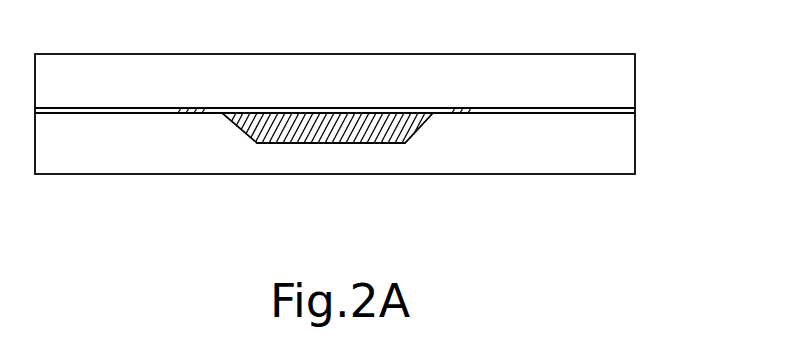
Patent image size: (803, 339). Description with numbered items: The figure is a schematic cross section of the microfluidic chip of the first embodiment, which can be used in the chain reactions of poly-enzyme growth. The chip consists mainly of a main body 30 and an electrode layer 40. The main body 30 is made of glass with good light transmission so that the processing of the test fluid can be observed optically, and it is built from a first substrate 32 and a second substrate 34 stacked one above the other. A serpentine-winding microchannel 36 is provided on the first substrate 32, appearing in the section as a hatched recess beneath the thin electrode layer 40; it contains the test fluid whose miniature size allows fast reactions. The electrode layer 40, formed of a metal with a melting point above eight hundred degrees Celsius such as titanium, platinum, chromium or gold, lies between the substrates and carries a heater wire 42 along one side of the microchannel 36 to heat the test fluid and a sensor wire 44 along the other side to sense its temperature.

The main body 30 is at (394, 114).
The first substrate 32 is at (368, 130).
The second substrate 34 is at (637, 82).
The microchannel 36 is at (381, 118).
The electrode layer 40 is at (324, 136).
The heater wire 42 is at (192, 113).
The sensor wire 44 is at (444, 163).